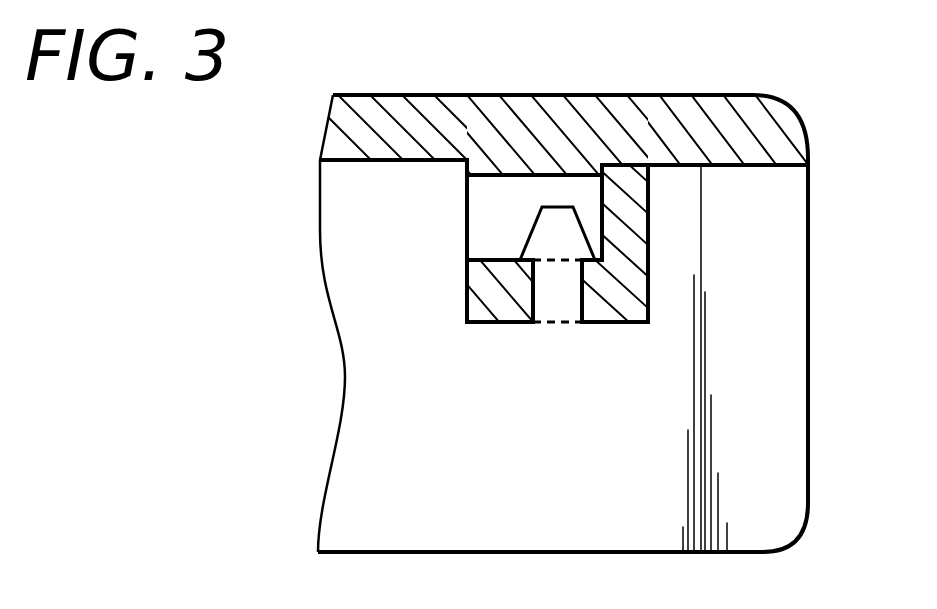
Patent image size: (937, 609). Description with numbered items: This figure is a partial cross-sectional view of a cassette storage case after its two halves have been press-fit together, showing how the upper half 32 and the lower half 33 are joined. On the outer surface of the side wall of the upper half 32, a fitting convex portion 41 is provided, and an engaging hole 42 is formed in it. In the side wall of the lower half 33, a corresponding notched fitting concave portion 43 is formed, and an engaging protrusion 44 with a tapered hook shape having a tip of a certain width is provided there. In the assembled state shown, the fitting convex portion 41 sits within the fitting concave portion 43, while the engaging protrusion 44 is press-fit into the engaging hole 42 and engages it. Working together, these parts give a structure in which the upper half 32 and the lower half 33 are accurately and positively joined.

The upper half 32 is at (432, 113).
The lower half 33 is at (770, 400).
The fitting convex portion 41 is at (632, 222).
The engaging hole 42 is at (578, 292).
The fitting concave portion 43 is at (647, 257).
The engaging protrusion 44 is at (556, 215).